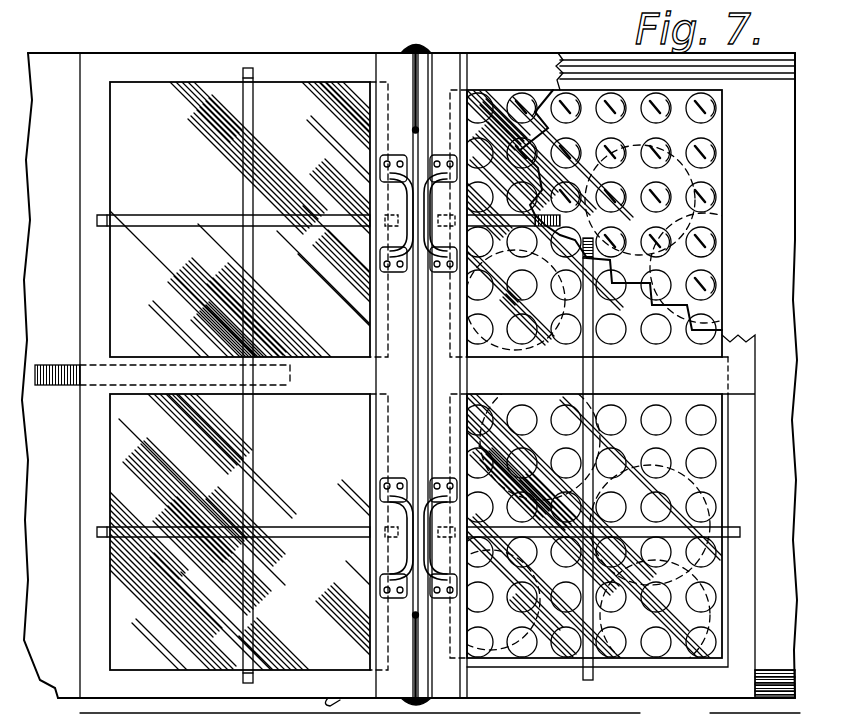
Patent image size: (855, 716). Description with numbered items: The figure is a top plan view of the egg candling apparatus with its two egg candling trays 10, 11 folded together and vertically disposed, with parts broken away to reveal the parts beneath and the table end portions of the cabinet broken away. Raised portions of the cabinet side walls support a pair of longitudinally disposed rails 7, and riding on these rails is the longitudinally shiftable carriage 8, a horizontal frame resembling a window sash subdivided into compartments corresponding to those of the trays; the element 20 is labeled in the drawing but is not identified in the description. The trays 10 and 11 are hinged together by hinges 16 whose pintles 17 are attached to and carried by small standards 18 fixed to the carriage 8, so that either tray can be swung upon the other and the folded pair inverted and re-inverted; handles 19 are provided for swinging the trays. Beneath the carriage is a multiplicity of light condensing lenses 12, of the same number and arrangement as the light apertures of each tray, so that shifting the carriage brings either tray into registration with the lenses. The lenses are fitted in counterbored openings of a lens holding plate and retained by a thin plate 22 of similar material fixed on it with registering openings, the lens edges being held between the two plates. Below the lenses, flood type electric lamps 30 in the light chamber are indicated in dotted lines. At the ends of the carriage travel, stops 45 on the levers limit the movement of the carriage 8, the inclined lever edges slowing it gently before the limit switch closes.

The rails 7 is at (765, 78).
The carriage 8 is at (96, 62).
The tray 10 is at (382, 372).
The tray 11 is at (442, 372).
The light condensing lenses 12 is at (700, 145).
The hinges 16 is at (417, 68).
The pintles 17 is at (415, 42).
The standards 18 is at (428, 52).
The handles 19 is at (422, 207).
The panels 20 is at (168, 98).
The thin plate 22 is at (192, 363).
The electric lamps 30 is at (728, 195).
The stops 45 is at (80, 373).